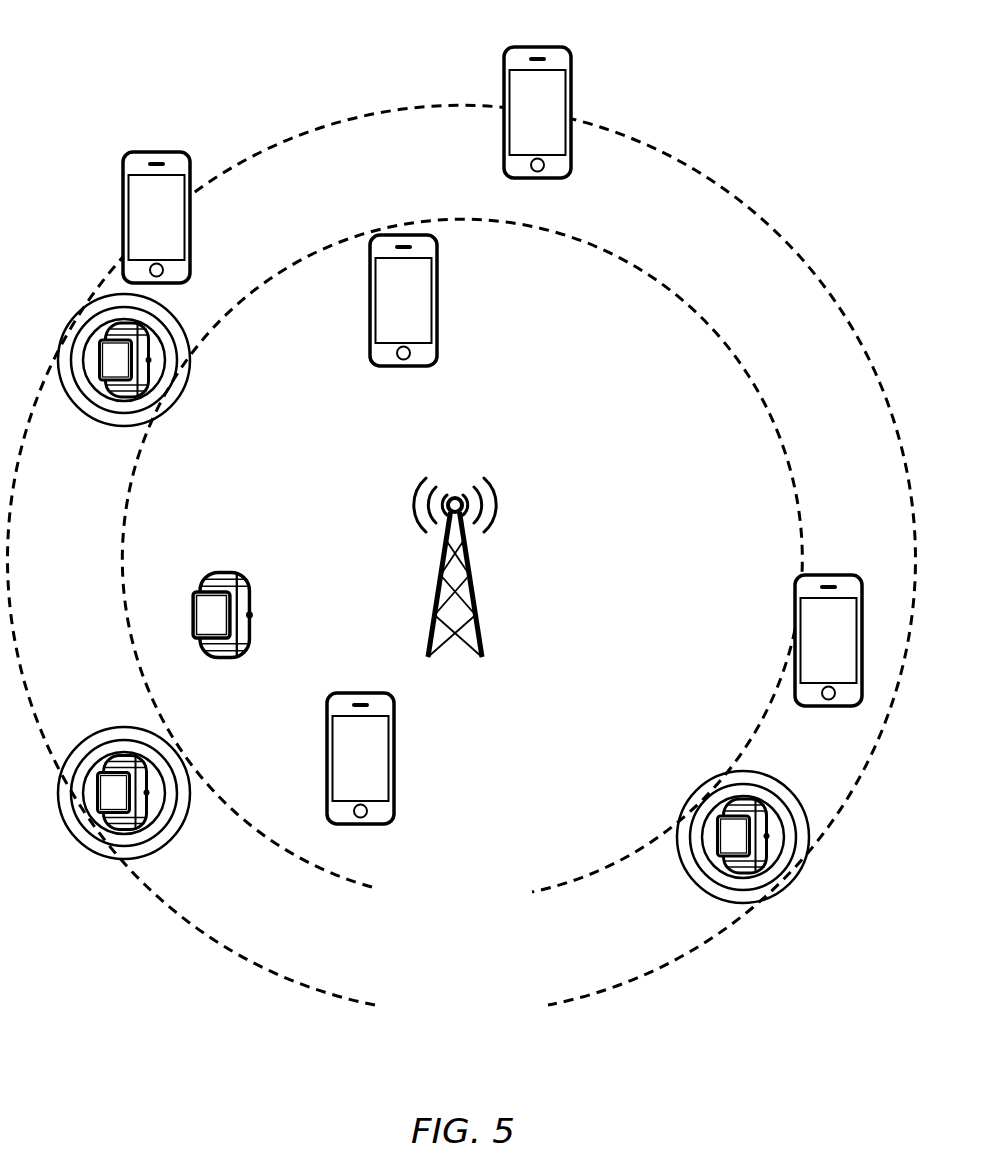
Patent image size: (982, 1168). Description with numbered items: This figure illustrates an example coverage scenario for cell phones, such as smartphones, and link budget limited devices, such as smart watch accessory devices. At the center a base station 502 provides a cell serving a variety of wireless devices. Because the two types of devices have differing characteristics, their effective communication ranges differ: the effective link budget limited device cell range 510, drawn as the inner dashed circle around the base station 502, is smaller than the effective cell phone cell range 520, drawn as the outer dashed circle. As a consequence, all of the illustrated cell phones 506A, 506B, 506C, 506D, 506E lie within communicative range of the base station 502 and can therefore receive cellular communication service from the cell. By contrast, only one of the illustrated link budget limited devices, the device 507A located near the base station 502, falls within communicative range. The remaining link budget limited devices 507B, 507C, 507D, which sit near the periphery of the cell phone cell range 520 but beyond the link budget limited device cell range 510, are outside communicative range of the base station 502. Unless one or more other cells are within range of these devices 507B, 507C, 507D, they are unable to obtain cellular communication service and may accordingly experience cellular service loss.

The base station 502 is at (482, 596).
The cell phone 506A is at (355, 693).
The cell phone 506B is at (148, 152).
The cell phone 506C is at (537, 47).
The cell phone 506D is at (828, 575).
The cell phone 506E is at (437, 310).
The link budget limited device 507A is at (244, 601).
The link budget limited device 507B is at (97, 424).
The link budget limited device 507C is at (104, 730).
The link budget limited device 507D is at (688, 883).
The link budget limited device cell range 510 is at (434, 935).
The cell phone cell range 520 is at (441, 1052).